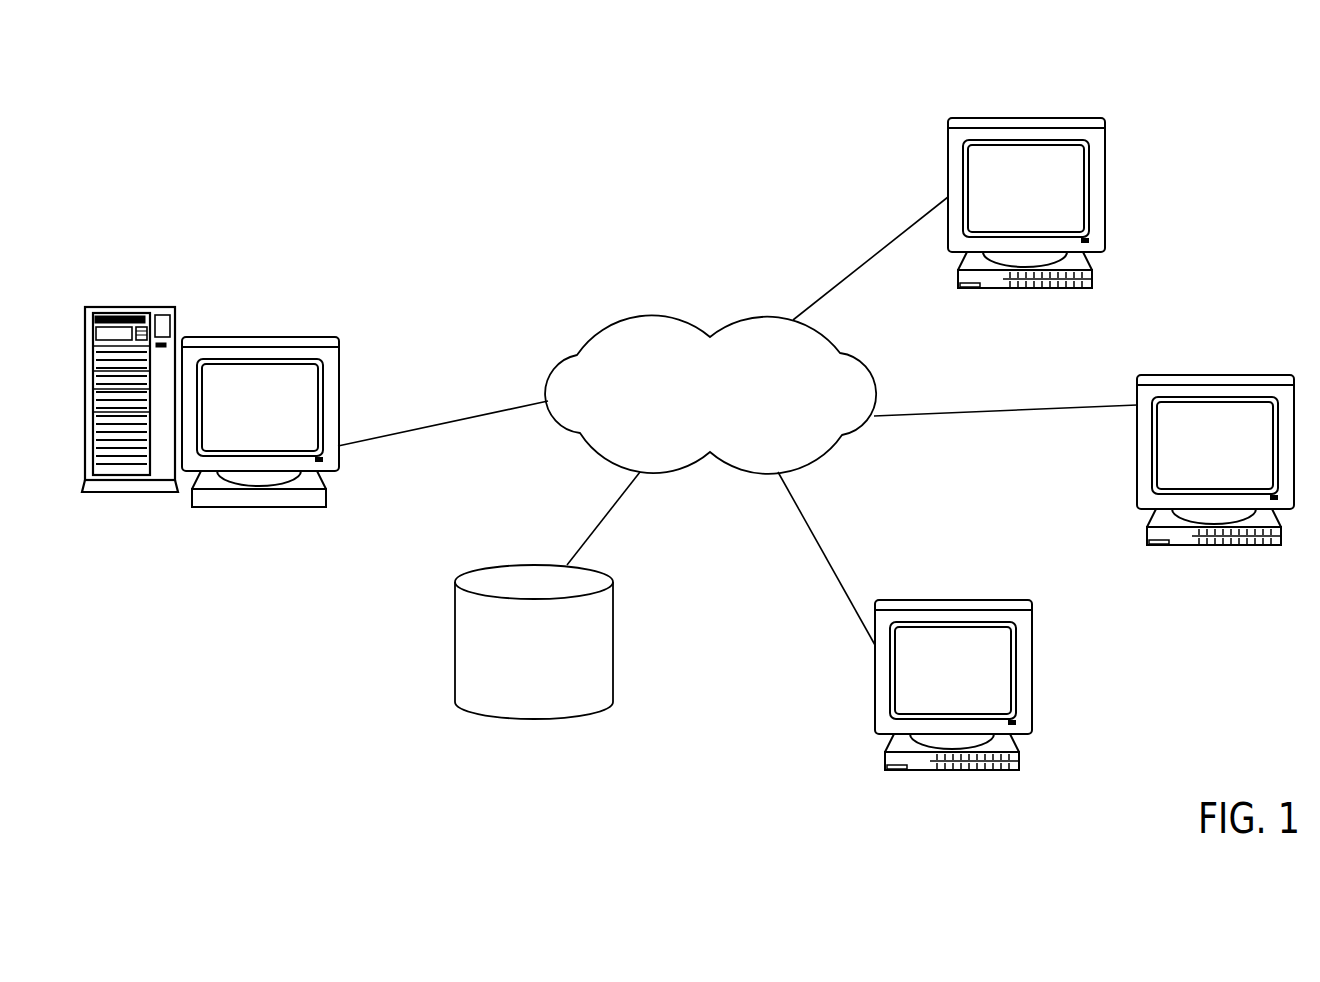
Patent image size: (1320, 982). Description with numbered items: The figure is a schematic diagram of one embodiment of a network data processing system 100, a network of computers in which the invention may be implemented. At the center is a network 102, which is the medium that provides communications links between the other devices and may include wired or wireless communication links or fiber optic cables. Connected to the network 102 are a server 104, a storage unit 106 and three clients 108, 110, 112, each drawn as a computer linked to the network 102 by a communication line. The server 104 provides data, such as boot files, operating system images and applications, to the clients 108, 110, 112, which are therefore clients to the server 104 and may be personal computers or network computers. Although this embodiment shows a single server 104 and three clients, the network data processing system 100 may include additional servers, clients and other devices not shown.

The network data processing system 100 is at (794, 663).
The network 102 is at (683, 389).
The server 104 is at (271, 337).
The storage unit 106 is at (561, 720).
The client 108 is at (1030, 118).
The client 110 is at (1222, 375).
The client 112 is at (1034, 668).